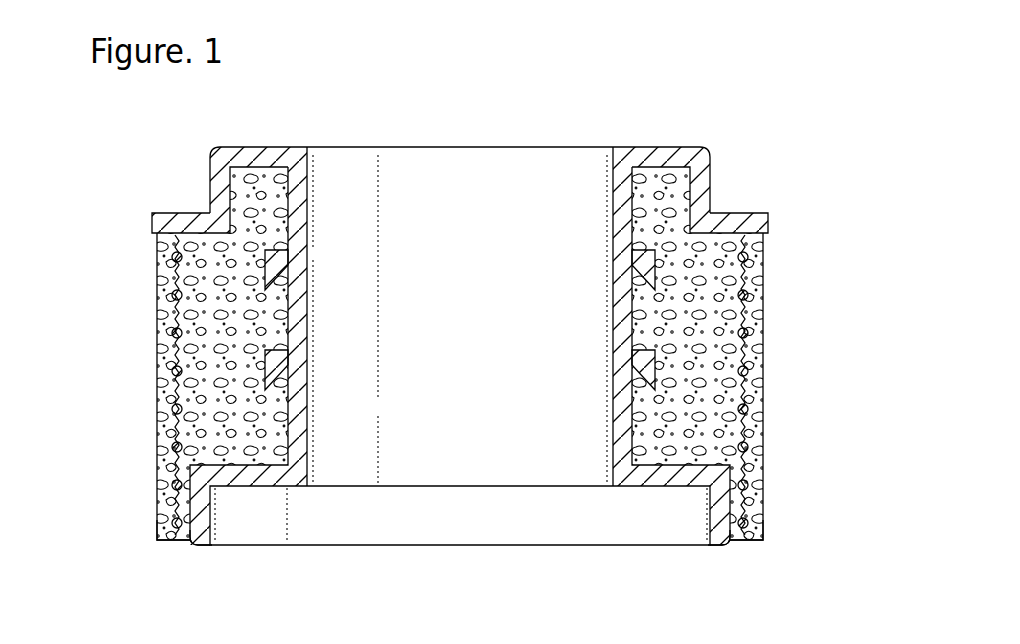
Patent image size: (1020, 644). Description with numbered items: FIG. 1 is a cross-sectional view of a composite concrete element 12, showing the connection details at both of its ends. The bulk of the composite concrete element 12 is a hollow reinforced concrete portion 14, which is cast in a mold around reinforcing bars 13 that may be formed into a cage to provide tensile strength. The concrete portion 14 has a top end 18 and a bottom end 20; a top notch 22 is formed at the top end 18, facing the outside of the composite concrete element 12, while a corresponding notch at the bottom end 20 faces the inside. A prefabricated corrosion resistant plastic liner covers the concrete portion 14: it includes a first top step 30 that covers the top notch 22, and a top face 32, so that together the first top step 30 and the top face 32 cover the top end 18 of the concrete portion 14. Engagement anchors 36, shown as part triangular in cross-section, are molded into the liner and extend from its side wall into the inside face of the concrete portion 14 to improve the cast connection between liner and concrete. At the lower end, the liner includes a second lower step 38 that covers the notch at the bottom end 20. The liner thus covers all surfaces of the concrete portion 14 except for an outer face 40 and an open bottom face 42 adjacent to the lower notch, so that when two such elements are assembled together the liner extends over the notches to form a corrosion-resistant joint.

The composite concrete element 12 is at (757, 99).
The reinforcing bars 13 is at (176, 362).
The concrete portion 14 is at (165, 257).
The top end 18 is at (410, 147).
The bottom end 20 is at (530, 547).
The top notch 22 is at (755, 224).
The first top step 30 is at (187, 212).
The top face 32 is at (247, 147).
The engagement anchors 36 is at (265, 365).
The second lower step 38 is at (210, 510).
The outer face 40 is at (172, 452).
The open bottom face 42 is at (165, 541).